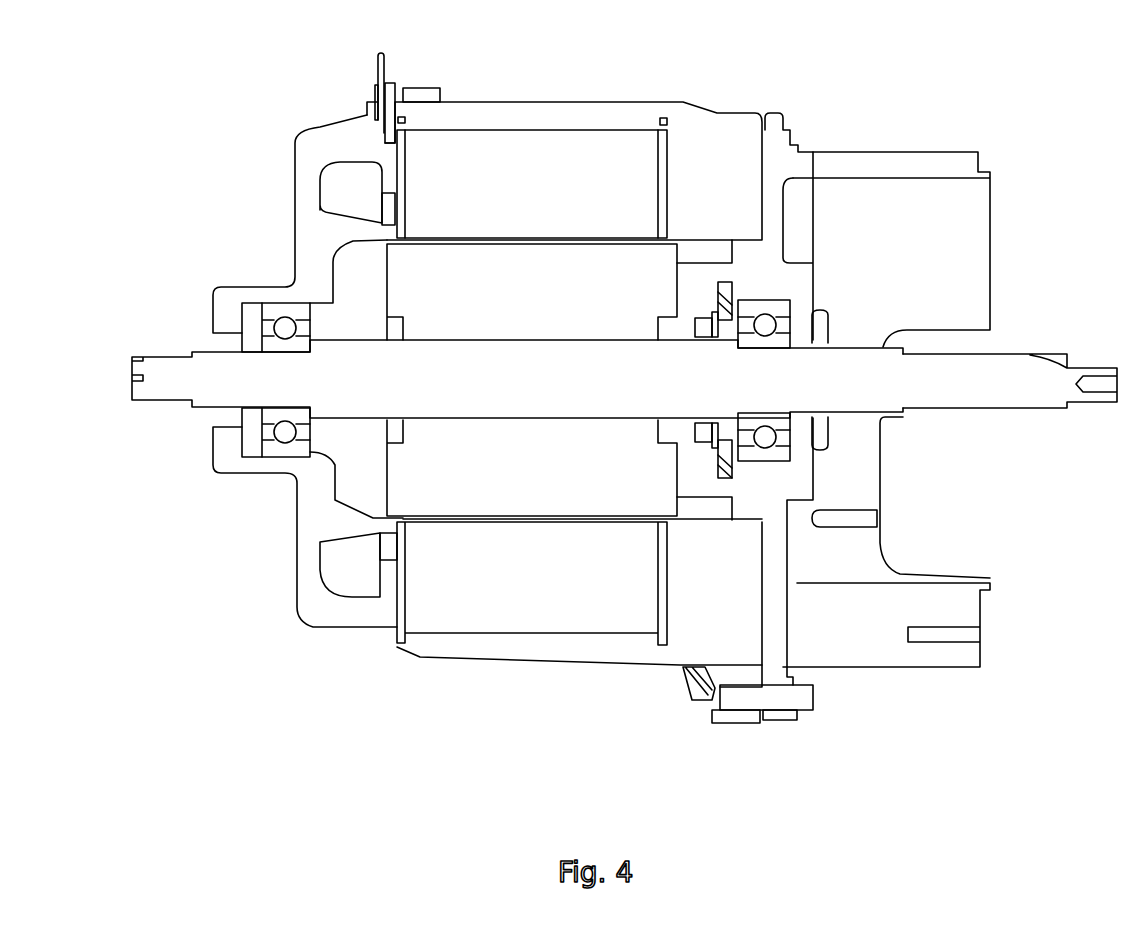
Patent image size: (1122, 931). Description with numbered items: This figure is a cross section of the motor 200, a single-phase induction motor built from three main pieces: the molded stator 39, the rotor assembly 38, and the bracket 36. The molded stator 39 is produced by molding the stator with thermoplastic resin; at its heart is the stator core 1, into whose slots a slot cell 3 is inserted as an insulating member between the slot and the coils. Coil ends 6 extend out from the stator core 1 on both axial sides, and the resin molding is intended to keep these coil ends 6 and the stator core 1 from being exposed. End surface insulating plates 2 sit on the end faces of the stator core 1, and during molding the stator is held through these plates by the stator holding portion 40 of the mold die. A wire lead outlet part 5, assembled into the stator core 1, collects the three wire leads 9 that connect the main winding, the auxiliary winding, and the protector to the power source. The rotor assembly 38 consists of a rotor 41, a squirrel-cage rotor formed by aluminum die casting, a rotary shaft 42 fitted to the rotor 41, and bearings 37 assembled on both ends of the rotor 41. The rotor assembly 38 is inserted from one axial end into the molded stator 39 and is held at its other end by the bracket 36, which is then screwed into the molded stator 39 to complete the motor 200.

The motor 200 is at (1034, 62).
The stator core 1 is at (573, 635).
The end surface insulating plates 2 is at (395, 632).
The slot cell 3 is at (367, 140).
The wire lead outlet part 5 is at (395, 88).
The coil ends 6 is at (345, 198).
The wire leads 9 is at (388, 57).
The bracket 36 is at (978, 167).
The bearings 37 is at (762, 307).
The rotor assembly 38 is at (1005, 412).
The molded stator 39 is at (330, 152).
The stator holding portion 40 is at (403, 653).
The rotor 41 is at (400, 285).
The rotary shaft 42 is at (1005, 363).